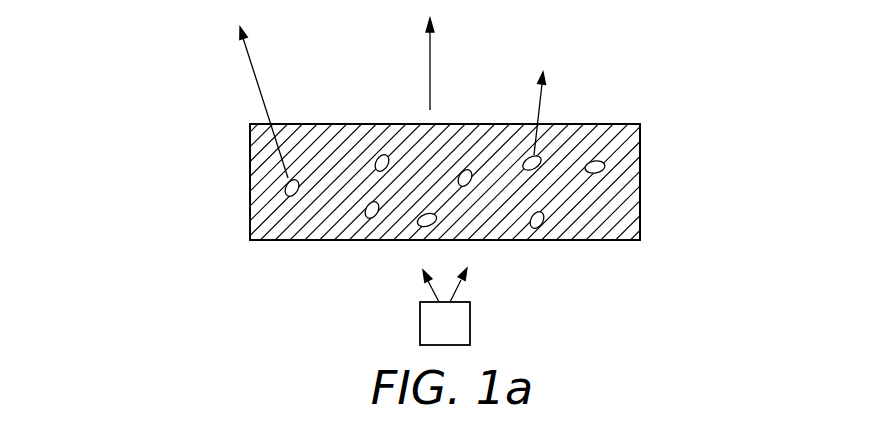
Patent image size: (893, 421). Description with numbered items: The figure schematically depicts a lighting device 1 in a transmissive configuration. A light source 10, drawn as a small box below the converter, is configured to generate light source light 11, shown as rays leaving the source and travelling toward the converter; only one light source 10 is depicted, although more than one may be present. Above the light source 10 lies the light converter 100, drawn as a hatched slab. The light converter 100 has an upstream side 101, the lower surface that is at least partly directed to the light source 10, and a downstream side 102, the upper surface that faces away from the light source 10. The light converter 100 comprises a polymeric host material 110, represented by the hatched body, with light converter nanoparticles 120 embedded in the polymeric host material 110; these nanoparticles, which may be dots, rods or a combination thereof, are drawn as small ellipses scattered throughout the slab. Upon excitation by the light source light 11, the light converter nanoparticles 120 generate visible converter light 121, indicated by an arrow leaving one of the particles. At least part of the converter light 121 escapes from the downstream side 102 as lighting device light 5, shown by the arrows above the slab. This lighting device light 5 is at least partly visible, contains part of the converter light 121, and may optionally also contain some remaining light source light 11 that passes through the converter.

The lighting device 1 is at (714, 170).
The lighting device light 5 is at (146, 97).
The light source 10 is at (507, 336).
The light source light 11 is at (397, 297).
The light converter 100 is at (197, 162).
The upstream side 101 is at (587, 241).
The downstream side 102 is at (450, 124).
The polymeric host material 110 is at (620, 207).
The light converter nanoparticles 120 is at (596, 160).
The converter light 121 is at (251, 60).